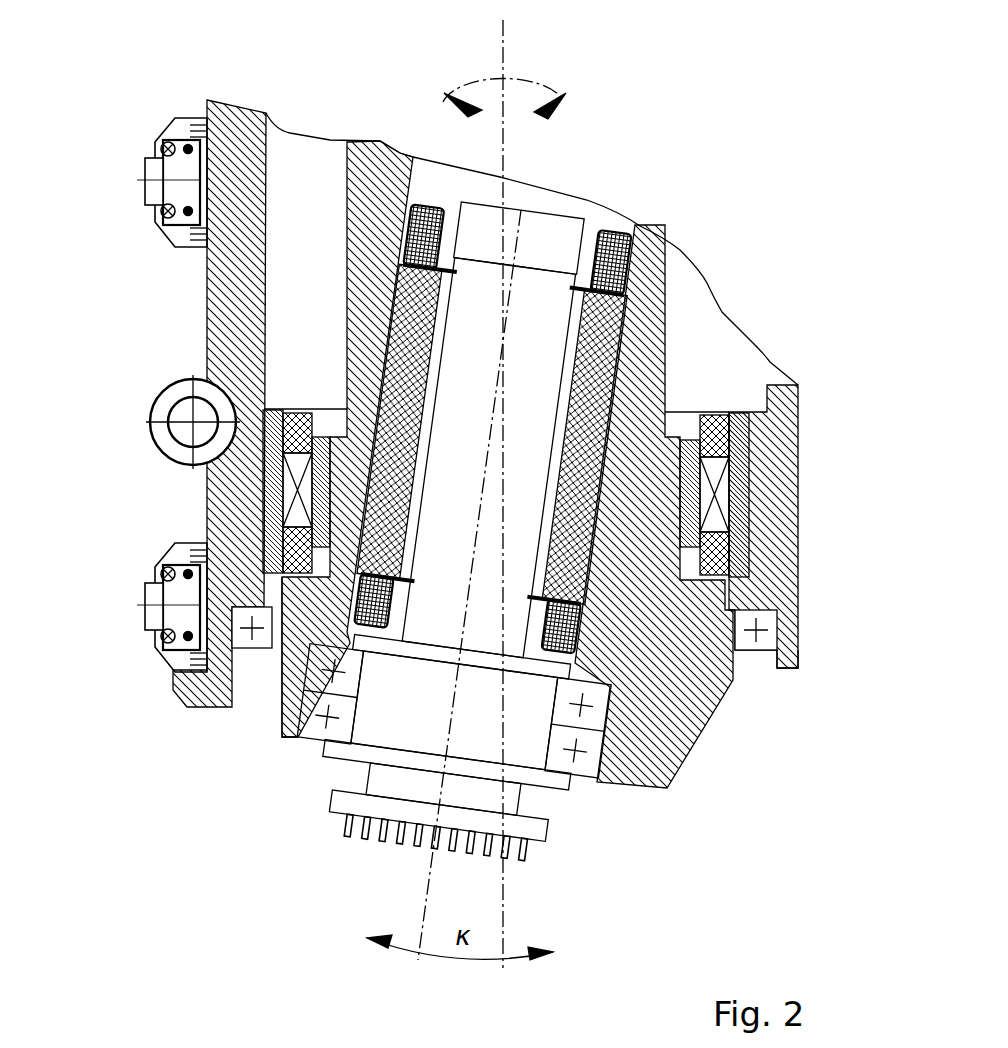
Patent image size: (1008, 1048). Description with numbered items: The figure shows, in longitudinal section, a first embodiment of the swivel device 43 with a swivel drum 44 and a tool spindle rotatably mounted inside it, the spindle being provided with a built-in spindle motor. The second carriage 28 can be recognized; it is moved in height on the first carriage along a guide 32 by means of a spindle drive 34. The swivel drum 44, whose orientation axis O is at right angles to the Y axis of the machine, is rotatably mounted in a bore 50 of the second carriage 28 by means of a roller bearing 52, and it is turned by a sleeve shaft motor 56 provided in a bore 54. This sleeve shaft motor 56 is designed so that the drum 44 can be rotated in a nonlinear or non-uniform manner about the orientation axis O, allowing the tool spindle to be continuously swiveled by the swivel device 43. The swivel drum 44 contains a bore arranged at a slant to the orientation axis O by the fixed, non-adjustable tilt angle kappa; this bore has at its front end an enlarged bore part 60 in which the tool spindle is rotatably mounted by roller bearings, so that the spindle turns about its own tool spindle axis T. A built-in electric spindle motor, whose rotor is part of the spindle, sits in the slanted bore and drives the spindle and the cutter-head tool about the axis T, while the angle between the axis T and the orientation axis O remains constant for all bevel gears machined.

The second carriage 28 is at (228, 325).
The guide 32 is at (147, 179).
The spindle drive 34 is at (150, 421).
The swivel device 43 is at (686, 214).
The swivel drum 44 is at (647, 778).
The bore 50 is at (793, 645).
The roller bearing 52 is at (535, 675).
The bore 54 is at (750, 447).
The sleeve shaft motor 56 is at (720, 493).
The enlarged bore part 60 is at (272, 732).
The orientation axis O is at (502, 160).
The tool spindle axis T is at (425, 898).